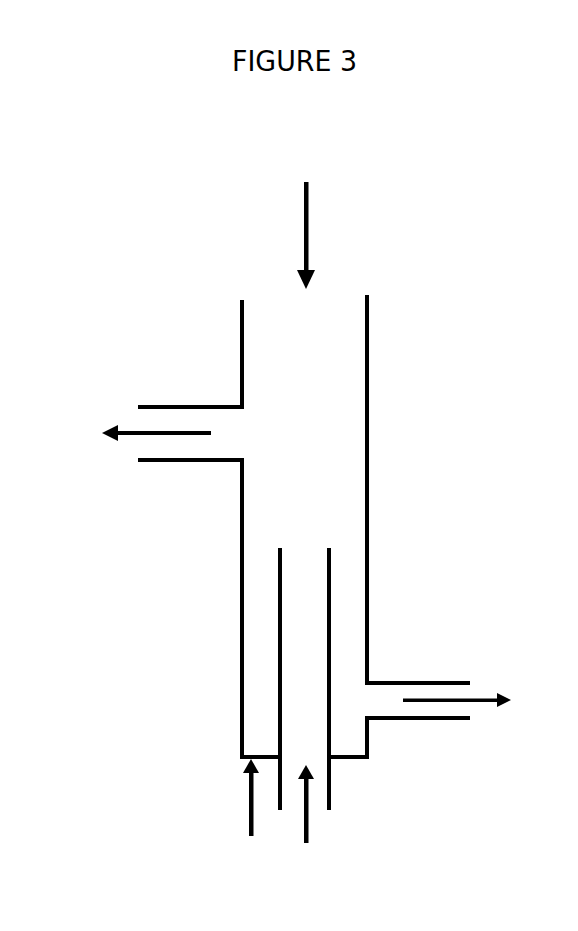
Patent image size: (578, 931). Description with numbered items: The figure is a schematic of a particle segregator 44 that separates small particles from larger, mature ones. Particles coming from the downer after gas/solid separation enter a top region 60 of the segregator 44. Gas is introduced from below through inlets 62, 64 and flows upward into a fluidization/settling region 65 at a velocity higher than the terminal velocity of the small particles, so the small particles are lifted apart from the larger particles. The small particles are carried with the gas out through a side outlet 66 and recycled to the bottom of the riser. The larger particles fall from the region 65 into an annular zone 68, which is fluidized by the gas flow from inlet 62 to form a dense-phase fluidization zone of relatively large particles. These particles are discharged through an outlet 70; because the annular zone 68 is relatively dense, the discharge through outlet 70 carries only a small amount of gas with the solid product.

The segregator 44 is at (170, 240).
The top region 60 is at (307, 252).
The inlet 62 is at (248, 810).
The inlet 64 is at (332, 800).
The fluidization/settling region 65 is at (304, 528).
The outlet 66 is at (163, 462).
The annular zone 68 is at (320, 679).
The outlet 70 is at (421, 682).